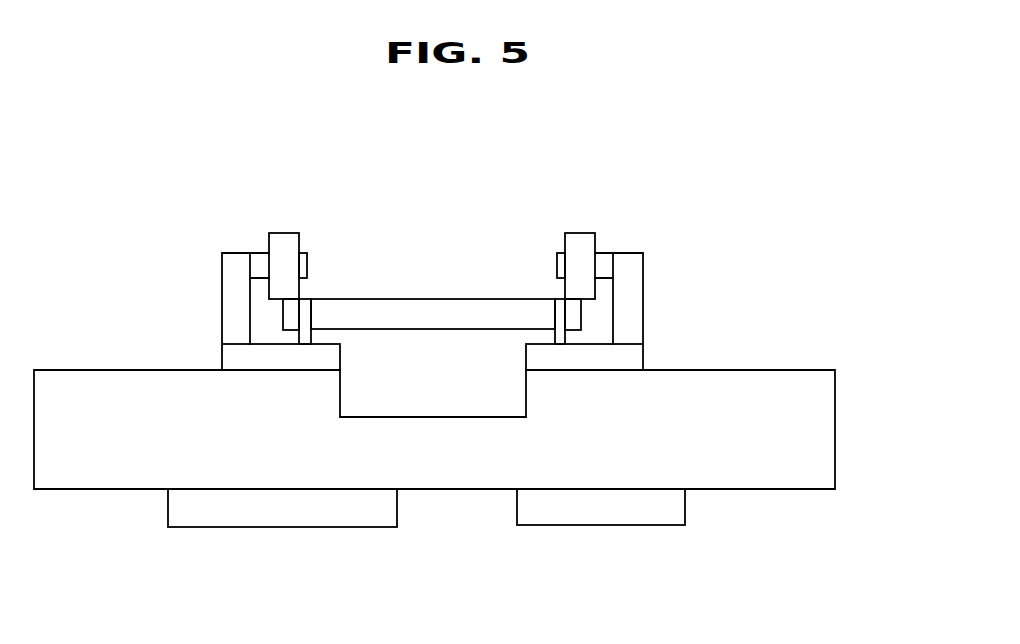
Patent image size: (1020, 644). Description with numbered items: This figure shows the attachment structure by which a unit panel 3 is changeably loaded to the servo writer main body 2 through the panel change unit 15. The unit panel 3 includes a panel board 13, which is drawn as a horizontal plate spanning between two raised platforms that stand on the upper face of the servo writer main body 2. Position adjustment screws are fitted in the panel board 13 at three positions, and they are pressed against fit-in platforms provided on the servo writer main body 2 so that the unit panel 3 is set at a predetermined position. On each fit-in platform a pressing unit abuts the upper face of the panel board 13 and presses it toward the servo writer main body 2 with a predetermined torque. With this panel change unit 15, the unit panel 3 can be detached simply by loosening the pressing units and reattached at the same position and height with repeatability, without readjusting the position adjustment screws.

The servo writer main body 2 is at (733, 380).
The unit panel 3 is at (518, 230).
The panel board 13 is at (348, 313).
The panel change unit 15 is at (455, 182).